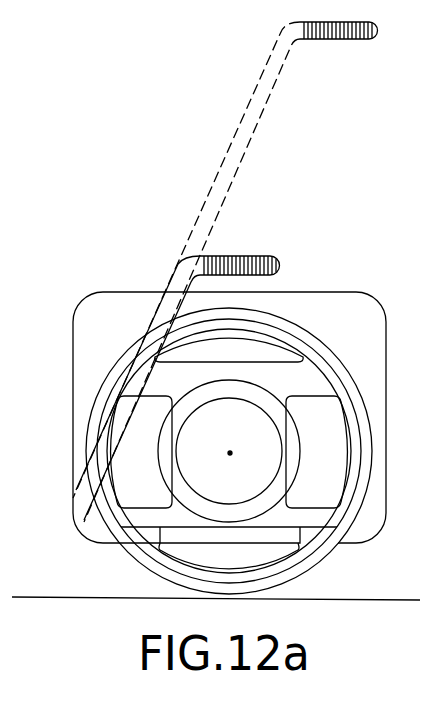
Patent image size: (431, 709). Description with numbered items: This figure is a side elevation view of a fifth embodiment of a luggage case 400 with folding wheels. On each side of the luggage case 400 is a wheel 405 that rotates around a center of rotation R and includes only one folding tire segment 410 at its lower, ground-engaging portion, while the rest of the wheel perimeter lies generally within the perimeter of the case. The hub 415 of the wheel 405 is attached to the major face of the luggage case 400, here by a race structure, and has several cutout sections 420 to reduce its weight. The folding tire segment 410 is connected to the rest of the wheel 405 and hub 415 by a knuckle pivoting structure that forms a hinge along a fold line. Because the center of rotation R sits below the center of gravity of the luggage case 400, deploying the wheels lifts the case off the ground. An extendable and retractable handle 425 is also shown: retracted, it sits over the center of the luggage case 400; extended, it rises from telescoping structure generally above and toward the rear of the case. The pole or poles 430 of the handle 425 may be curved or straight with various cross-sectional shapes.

The luggage case 400 is at (350, 278).
The wheel 405 is at (110, 560).
The folding tire segment 410 is at (319, 557).
The hub 415 is at (322, 373).
The cutout sections 420 is at (342, 449).
The handle 425 is at (245, 254).
The poles 430 is at (147, 291).